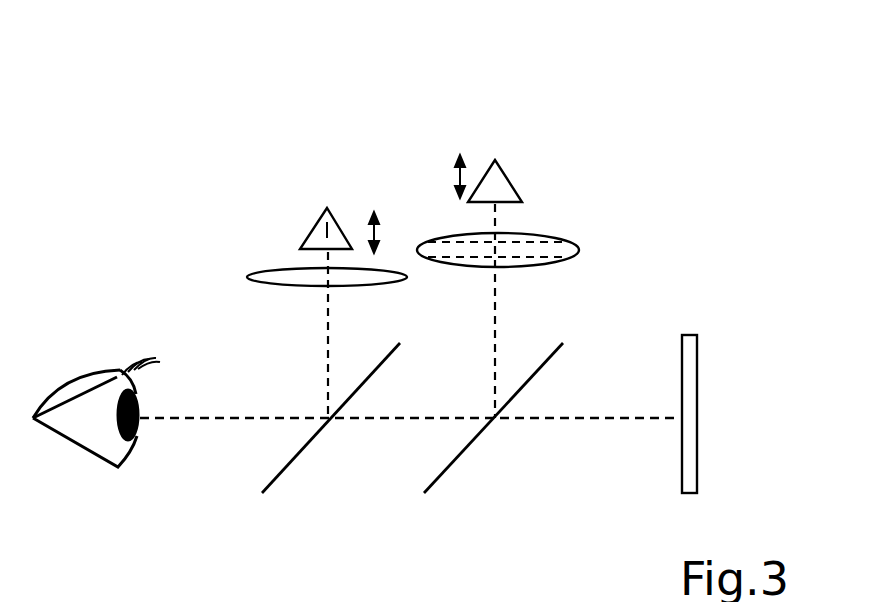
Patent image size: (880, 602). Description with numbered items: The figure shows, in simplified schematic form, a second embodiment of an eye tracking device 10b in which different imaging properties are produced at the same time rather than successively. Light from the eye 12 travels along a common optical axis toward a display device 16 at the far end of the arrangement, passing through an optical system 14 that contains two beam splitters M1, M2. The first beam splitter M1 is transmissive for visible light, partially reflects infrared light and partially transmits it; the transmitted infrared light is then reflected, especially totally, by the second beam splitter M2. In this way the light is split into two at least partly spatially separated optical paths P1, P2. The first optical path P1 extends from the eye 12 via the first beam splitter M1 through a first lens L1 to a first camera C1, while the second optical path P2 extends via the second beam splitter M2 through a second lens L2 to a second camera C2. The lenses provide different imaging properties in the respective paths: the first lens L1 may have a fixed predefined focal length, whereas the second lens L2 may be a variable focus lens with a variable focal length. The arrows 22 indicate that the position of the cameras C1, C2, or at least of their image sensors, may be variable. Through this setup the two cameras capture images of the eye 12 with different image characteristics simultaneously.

The eye tracking device 10b is at (213, 125).
The eye 12 is at (85, 370).
The optical system 14 is at (148, 215).
The display device 16 is at (697, 352).
The arrows 22 is at (378, 232).
The first lens L1 is at (265, 268).
The second lens L2 is at (578, 245).
The first camera C1 is at (327, 212).
The second camera C2 is at (492, 185).
The first optical path P1 is at (330, 328).
The second optical path P2 is at (496, 322).
The first beam splitter M1 is at (282, 475).
The second beam splitter M2 is at (443, 478).